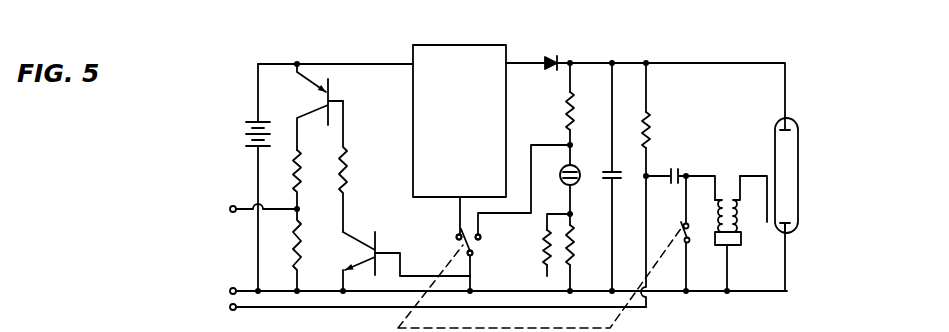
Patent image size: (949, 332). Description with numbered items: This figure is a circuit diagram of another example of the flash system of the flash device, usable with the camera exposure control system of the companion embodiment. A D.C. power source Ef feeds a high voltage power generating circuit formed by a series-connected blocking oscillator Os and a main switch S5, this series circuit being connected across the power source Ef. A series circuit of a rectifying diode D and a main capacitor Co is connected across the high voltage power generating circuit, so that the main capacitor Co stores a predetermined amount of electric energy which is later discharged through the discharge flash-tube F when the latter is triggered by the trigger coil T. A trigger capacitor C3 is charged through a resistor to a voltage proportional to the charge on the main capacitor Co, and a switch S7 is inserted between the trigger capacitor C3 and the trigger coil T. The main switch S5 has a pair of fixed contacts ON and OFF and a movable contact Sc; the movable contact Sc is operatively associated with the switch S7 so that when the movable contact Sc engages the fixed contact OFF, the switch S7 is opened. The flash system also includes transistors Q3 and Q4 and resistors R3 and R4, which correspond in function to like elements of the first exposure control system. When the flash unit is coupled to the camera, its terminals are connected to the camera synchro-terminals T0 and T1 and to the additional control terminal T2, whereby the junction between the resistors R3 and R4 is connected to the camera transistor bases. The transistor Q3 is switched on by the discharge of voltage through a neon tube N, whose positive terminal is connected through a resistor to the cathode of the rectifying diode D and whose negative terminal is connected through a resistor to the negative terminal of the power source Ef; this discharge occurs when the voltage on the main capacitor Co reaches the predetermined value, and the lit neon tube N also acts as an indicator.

The D.C. power source Ef is at (246, 128).
The transistor Q4 is at (333, 92).
The transistor Q3 is at (362, 236).
The resistor R3 is at (316, 179).
The resistor R4 is at (301, 246).
The control terminal T2 is at (213, 210).
The synchro-terminal T0 is at (213, 290).
The synchro-terminal T1 is at (213, 310).
The blocking oscillator Os is at (430, 45).
The main switch S5 is at (479, 247).
The fixed contact ON is at (457, 236).
The fixed contact OFF is at (481, 237).
The movable contact Sc is at (467, 253).
The rectifying diode D is at (552, 57).
The main capacitor Co is at (607, 170).
The neon tube N is at (578, 181).
The trigger capacitor C3 is at (676, 170).
The trigger coil T is at (733, 190).
The discharge flash-tube F is at (799, 168).
The switch S7 is at (690, 242).